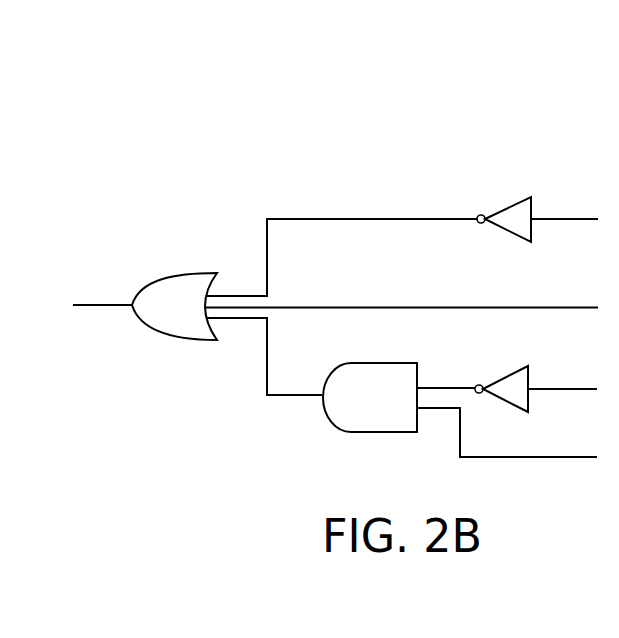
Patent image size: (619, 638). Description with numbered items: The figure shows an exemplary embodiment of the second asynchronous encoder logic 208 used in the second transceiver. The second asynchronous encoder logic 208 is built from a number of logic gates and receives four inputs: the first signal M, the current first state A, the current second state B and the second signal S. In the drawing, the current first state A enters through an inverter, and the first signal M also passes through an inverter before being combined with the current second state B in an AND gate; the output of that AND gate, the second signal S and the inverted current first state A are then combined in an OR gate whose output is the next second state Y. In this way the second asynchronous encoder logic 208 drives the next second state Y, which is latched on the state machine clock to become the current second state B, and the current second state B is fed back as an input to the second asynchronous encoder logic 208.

The second asynchronous encoder logic 208 is at (383, 156).
The current first state A is at (402, 242).
The second signal S is at (401, 292).
The first signal M is at (507, 386).
The current second state B is at (507, 432).
The next second state Y is at (102, 286).